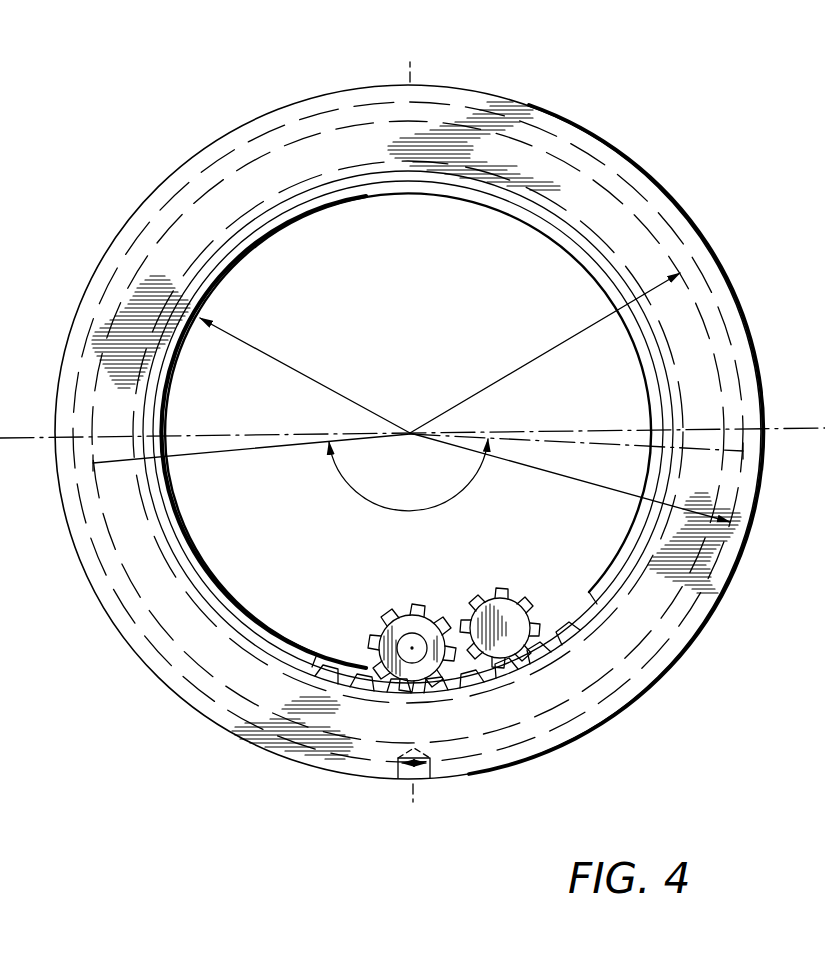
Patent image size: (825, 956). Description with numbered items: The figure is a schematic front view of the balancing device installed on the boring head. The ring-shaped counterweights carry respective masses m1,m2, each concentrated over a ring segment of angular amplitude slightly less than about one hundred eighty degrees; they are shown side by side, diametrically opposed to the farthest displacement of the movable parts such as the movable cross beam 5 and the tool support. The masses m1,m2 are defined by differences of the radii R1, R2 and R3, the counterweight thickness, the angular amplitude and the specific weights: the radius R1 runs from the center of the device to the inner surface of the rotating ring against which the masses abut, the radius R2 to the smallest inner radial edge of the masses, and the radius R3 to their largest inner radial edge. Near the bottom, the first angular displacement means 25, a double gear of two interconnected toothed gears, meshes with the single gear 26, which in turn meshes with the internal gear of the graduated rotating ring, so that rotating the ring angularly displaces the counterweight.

The movable cross beam 5 is at (410, 62).
The first angular displacement means 25 is at (516, 604).
The single gear 26 is at (398, 614).
The radius R1 is at (528, 470).
The radius R2 is at (368, 368).
The radius R3 is at (521, 370).
The masses m1,m2 is at (409, 432).